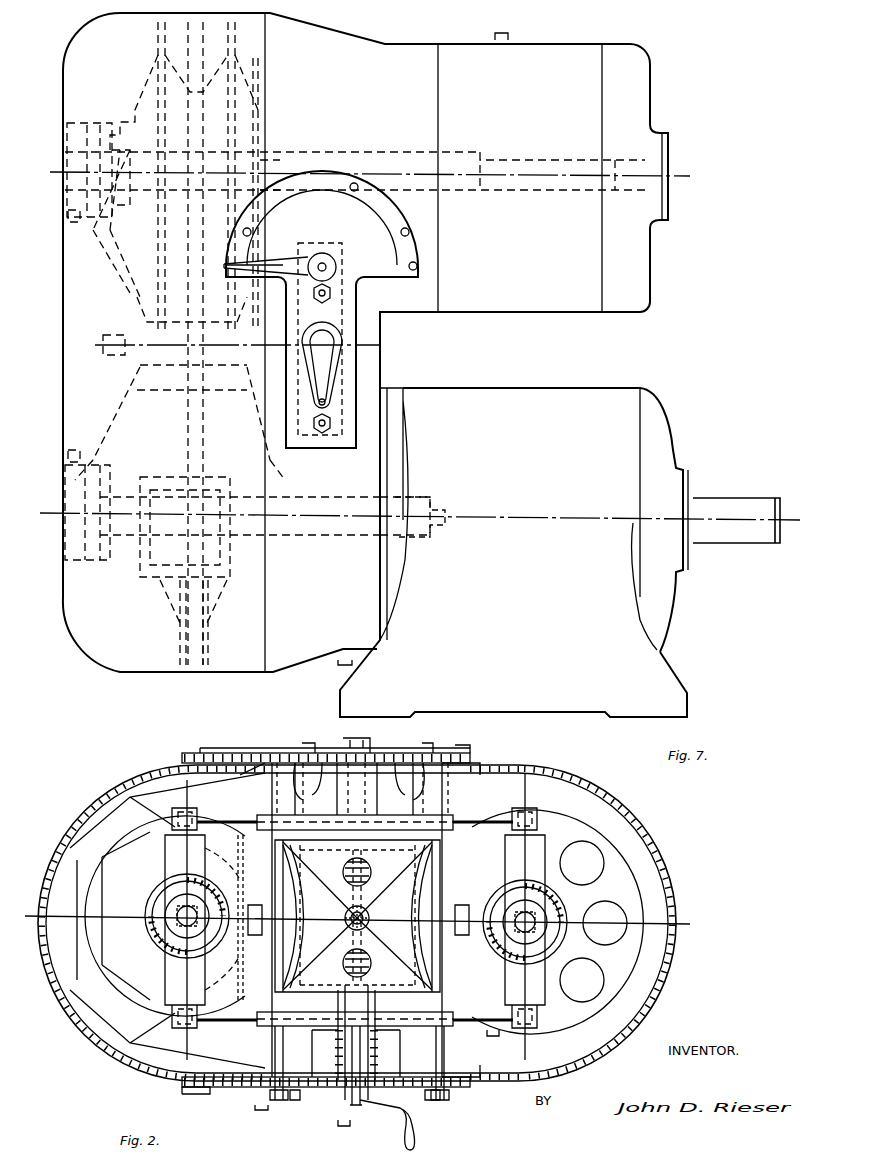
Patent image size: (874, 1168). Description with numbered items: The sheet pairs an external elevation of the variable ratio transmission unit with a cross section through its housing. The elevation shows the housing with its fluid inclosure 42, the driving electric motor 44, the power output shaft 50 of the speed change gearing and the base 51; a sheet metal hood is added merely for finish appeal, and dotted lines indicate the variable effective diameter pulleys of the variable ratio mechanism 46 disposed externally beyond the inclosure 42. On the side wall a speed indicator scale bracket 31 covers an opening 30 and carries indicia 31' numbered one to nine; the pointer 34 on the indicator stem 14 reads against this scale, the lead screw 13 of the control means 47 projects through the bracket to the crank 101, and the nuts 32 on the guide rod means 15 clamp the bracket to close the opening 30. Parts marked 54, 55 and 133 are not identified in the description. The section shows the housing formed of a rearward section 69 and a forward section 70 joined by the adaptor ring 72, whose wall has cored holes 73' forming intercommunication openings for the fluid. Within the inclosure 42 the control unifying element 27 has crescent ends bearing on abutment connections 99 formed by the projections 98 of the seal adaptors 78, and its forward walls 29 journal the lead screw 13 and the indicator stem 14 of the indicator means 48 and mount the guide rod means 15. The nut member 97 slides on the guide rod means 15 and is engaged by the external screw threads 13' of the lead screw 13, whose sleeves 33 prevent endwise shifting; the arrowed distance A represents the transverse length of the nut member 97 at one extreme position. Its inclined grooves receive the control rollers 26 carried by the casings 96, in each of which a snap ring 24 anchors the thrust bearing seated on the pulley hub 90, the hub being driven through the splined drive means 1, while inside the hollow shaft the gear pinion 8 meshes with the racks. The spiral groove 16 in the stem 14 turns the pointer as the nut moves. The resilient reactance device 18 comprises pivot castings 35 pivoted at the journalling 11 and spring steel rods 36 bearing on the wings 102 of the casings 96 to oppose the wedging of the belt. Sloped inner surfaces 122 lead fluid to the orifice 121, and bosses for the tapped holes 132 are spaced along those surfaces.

In FIG. 2, the drive means 1 is at (140, 950).
In FIG. 2, the gear pinion 8 is at (327, 883).
In FIG. 2, the pivot point 11 is at (390, 1026).
In FIG. 2, the lead screw 13 is at (370, 873).
In FIG. 2, the external screw threads 13' is at (378, 895).
In FIG. 2, the indicator stem 14 is at (255, 780).
In FIG. 2, the guide rod means 15 is at (305, 812).
In FIG. 2, the spiral groove 16 is at (283, 893).
In FIG. 2, the resilient reactance device 18 is at (493, 1042).
In FIG. 2, the snap ring 24 is at (355, 920).
In FIG. 2, the control roller 26 is at (360, 910).
In FIG. 2, the control unifying element 27 is at (388, 861).
In FIG. 2, the forward wall 29 is at (391, 1001).
In FIG. 7, the opening 30 is at (344, 381).
In FIG. 2, the opening 30 is at (466, 917).
In FIG. 7, the speed indicator scale bracket 31 is at (352, 339).
In FIG. 2, the speed indicator scale bracket 31 is at (360, 941).
In FIG. 7, the indicia 31' is at (322, 289).
In FIG. 7, the nuts 32 is at (332, 294).
In FIG. 2, the nuts 32 is at (372, 929).
In FIG. 2, the sleeve 33 is at (388, 1045).
In FIG. 7, the pointer 34 is at (228, 266).
In FIG. 2, the pointer 34 is at (230, 1118).
In FIG. 2, the pivot castings 35 is at (405, 820).
In FIG. 2, the spring steel rods 36 is at (210, 820).
In FIG. 7, the fluid inclosure 42 is at (343, 671).
In FIG. 7, the driving electric motor 44 is at (503, 25).
In FIG. 7, the variable ratio mechanism 46 is at (185, 35).
In FIG. 2, the control means 47 is at (344, 1131).
In FIG. 2, the indicator means 48 is at (261, 1116).
In FIG. 7, the power output shaft 50 is at (722, 545).
In FIG. 7, the base 51 is at (635, 719).
In FIG. 7, the housing wall 54 is at (422, 44).
In FIG. 2, the housing wall 54 is at (150, 800).
In FIG. 7, the end cap 55 is at (645, 71).
In FIG. 7, the rearward section 69 is at (315, 662).
In FIG. 2, the rearward section 69 is at (666, 975).
In FIG. 7, the forward section 70 is at (440, 392).
In FIG. 7, the adaptor ring 72 is at (392, 385).
In FIG. 2, the cored holes 73' is at (610, 1000).
In FIG. 2, the seal adaptor 78 is at (347, 1040).
In FIG. 2, the hub 90 is at (200, 892).
In FIG. 2, the casing 96 is at (125, 890).
In FIG. 2, the nut member 97 is at (395, 968).
In FIG. 2, the projection 98 is at (252, 860).
In FIG. 2, the abutment connections 99 is at (432, 880).
In FIG. 7, the crank 101 is at (330, 362).
In FIG. 2, the crank 101 is at (395, 1105).
In FIG. 2, the wings 102 is at (165, 834).
In FIG. 2, the orifice 121 is at (100, 880).
In FIG. 2, the inner surfaces 122 is at (150, 780).
In FIG. 2, the tapped holes 132 is at (123, 873).
In FIG. 7, the terminal box 133 is at (668, 205).
In FIG. 2, the arrowed distance A is at (346, 963).